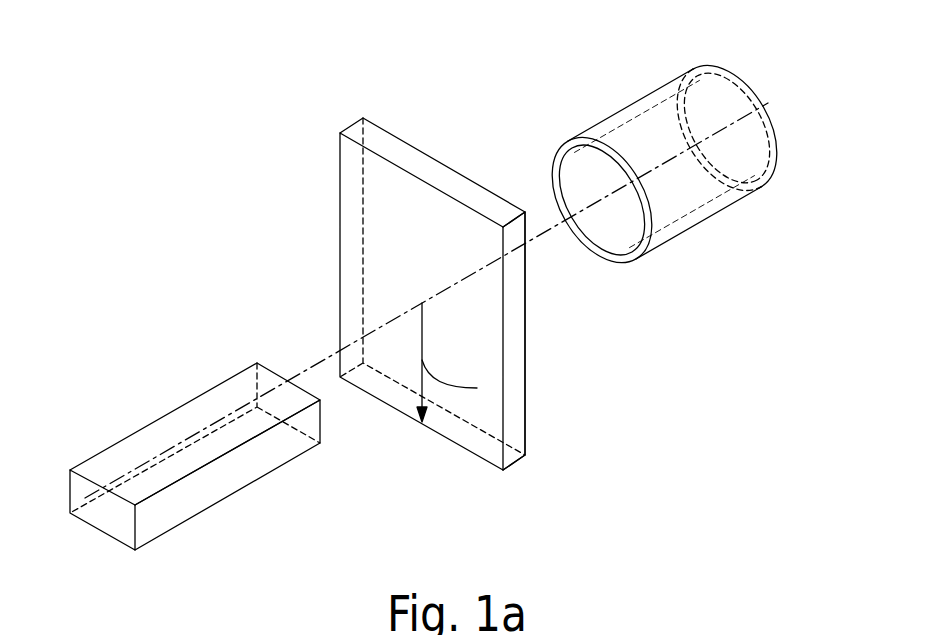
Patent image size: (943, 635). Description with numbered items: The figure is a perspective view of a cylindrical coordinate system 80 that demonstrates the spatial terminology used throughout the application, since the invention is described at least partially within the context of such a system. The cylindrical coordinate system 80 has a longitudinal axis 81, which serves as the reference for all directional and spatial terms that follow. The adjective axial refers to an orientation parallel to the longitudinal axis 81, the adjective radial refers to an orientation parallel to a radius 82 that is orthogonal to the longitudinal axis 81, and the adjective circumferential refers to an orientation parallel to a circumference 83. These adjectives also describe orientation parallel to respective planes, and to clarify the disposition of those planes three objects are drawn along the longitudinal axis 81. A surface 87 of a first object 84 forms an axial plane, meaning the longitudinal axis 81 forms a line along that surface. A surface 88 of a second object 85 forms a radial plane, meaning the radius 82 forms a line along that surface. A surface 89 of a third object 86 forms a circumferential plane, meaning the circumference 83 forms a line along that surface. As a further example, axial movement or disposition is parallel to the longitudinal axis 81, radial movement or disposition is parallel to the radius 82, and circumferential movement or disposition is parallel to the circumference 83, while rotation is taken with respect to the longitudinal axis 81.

The cylindrical coordinate system 80 is at (295, 170).
The longitudinal axis 81 is at (764, 101).
The radius 82 is at (477, 388).
The circumference 83 is at (552, 163).
The object 84 is at (195, 487).
The object 85 is at (533, 457).
The object 86 is at (690, 233).
The surface 87 is at (155, 438).
The surface 88 is at (355, 252).
The surface 89 is at (629, 171).